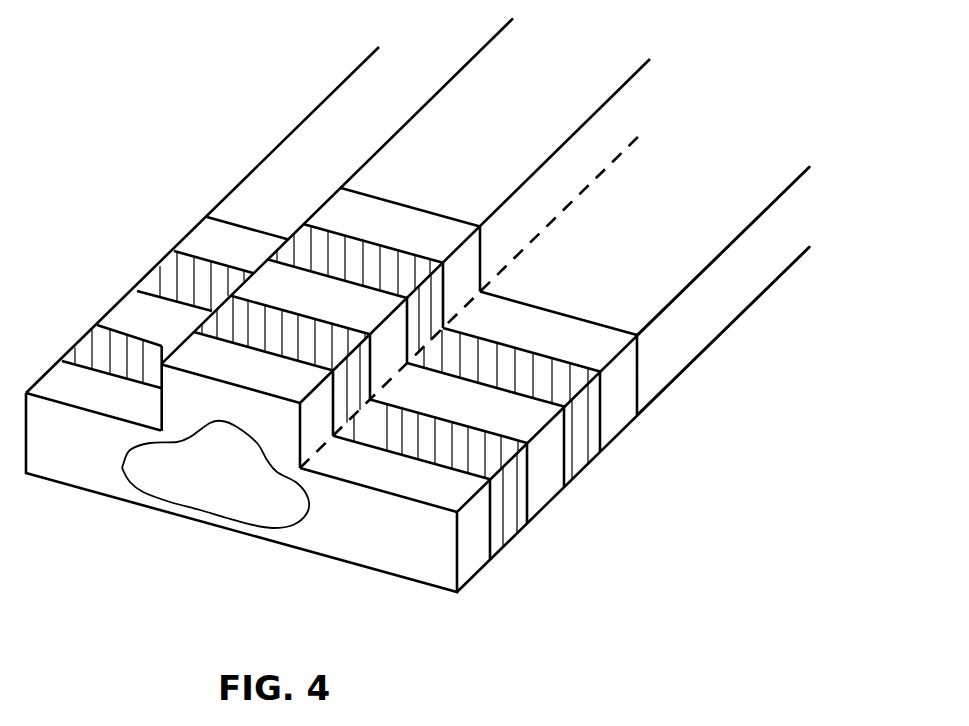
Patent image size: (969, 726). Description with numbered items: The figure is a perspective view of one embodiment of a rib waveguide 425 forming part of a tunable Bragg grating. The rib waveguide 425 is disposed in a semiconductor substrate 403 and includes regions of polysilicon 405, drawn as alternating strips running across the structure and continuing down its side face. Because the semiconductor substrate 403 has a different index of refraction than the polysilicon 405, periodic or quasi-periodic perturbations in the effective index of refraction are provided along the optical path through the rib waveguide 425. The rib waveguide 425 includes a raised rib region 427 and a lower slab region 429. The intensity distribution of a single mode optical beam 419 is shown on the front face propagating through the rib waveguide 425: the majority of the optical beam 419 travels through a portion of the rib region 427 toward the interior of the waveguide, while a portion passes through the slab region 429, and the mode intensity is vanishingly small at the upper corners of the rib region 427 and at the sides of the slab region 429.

The semiconductor substrate 403 is at (477, 572).
The polysilicon 405 is at (520, 532).
The optical beam 419 is at (236, 518).
The rib waveguide 425 is at (797, 120).
The rib region 427 is at (283, 430).
The slab region 429 is at (408, 561).